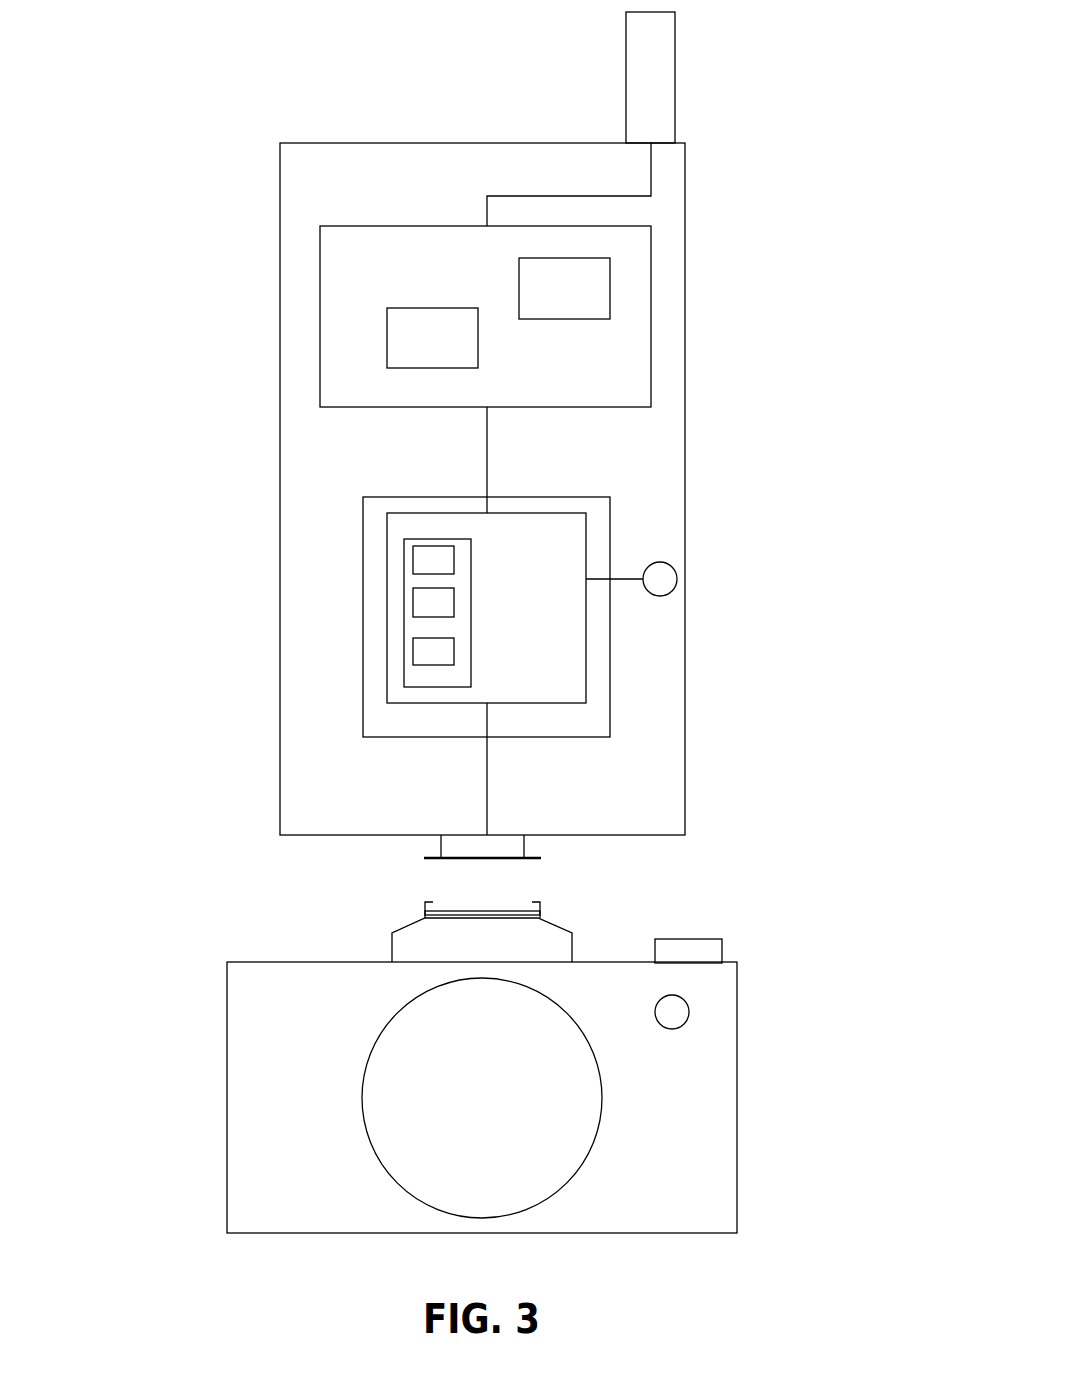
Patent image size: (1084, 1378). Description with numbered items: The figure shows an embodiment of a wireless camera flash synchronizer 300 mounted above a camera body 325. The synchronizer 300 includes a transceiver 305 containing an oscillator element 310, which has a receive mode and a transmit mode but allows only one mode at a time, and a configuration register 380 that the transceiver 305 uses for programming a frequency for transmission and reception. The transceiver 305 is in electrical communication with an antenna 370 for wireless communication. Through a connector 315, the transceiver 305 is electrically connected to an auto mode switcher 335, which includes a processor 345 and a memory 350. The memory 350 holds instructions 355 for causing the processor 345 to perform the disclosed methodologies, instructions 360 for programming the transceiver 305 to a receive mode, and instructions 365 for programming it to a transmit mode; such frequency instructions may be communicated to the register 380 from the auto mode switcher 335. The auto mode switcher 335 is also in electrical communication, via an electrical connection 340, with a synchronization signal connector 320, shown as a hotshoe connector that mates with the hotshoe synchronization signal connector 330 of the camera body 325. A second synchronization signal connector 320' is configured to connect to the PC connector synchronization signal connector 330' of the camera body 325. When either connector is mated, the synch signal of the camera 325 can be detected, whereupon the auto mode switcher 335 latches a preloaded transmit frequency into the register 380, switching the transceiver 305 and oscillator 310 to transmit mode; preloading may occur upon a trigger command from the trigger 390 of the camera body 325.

The synchronizer 300 is at (305, 177).
The transceiver 305 is at (643, 379).
The oscillator element 310 is at (593, 292).
The connector 315 is at (487, 472).
The synchronization signal connector 320 is at (414, 871).
The synchronization signal connector 320' is at (739, 559).
The camera body 325 is at (713, 1143).
The hotshoe synchronization signal connector 330 is at (538, 897).
The PC connector synchronization signal connector 330' is at (786, 1011).
The auto mode switcher 335 is at (585, 719).
The electrical connection 340 is at (487, 790).
The processor 345 is at (552, 654).
The memory 350 is at (412, 678).
The instructions 355 is at (433, 561).
The instructions 360 is at (433, 602).
The instructions 365 is at (433, 652).
The antenna 370 is at (643, 110).
The configuration register 380 is at (403, 341).
The trigger 390 is at (705, 948).